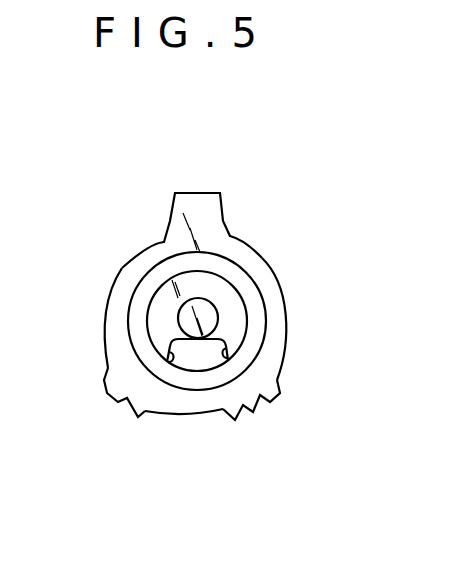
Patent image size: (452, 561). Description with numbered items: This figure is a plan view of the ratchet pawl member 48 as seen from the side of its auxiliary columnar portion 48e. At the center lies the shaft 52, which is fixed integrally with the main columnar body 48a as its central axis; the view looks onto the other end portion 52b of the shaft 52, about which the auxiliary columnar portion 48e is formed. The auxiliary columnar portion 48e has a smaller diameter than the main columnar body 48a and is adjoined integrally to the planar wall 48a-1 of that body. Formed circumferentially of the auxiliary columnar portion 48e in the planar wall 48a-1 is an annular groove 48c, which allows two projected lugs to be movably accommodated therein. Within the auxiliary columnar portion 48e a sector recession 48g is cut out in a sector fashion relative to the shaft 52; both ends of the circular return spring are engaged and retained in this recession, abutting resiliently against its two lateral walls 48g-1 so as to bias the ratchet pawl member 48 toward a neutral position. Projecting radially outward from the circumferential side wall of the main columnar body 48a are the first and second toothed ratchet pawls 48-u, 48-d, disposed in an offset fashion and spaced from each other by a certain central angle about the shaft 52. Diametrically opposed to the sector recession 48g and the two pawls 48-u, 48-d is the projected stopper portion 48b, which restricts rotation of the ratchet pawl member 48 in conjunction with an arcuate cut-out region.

The ratchet pawl member 48 is at (144, 170).
The main columnar body 48a is at (136, 256).
The planar wall 48a-1 is at (183, 400).
The projected stopper portion 48b is at (207, 193).
The annular groove 48c is at (258, 348).
The auxiliary columnar portion 48e is at (157, 295).
The sector recession 48g is at (197, 352).
The lateral walls 48g-1 is at (165, 361).
The first toothed ratchet pawl 48-u is at (120, 405).
The second toothed ratchet pawl 48-d is at (258, 405).
The end portion of the shaft 52b is at (283, 265).
The shaft 52 is at (203, 310).